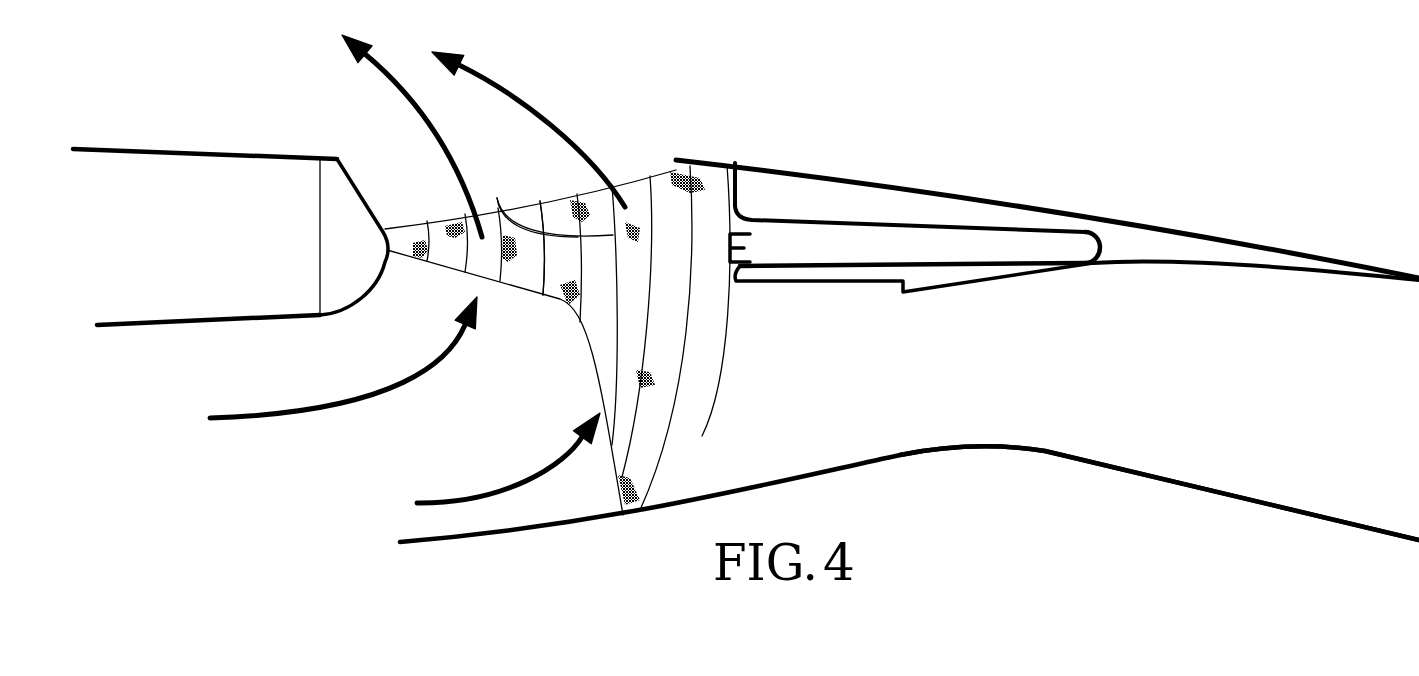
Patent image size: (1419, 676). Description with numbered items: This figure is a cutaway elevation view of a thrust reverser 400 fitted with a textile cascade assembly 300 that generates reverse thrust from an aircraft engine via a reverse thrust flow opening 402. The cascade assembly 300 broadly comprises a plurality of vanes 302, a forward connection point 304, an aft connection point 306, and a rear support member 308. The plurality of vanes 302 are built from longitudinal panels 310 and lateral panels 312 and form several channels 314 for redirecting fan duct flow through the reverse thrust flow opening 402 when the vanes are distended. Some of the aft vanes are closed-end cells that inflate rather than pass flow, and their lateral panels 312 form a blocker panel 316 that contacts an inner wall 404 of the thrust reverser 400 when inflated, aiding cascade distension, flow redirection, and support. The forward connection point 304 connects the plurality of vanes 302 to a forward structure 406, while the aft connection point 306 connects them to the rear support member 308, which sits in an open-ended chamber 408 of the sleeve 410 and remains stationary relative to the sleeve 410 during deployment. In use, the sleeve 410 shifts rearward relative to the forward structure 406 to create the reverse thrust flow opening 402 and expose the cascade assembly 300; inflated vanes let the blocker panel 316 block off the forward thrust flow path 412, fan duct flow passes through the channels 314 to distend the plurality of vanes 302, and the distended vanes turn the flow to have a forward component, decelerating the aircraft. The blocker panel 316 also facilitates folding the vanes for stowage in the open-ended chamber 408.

The cascade assembly 300 is at (632, 146).
The plurality of vanes 302 is at (545, 325).
The forward connection point 304 is at (389, 202).
The aft connection point 306 is at (739, 207).
The rear support member 308 is at (772, 248).
The longitudinal panels 310 is at (547, 215).
The lateral panels 312 is at (497, 198).
The channels 314 is at (574, 279).
The blocker panel 316 is at (720, 448).
The thrust reverser 400 is at (986, 111).
The reverse thrust flow opening 402 is at (387, 327).
The inner wall 404 is at (589, 521).
The forward structure 406 is at (259, 127).
The open-ended chamber 408 is at (1037, 225).
The sleeve 410 is at (1147, 224).
The forward thrust flow path 412 is at (1065, 400).